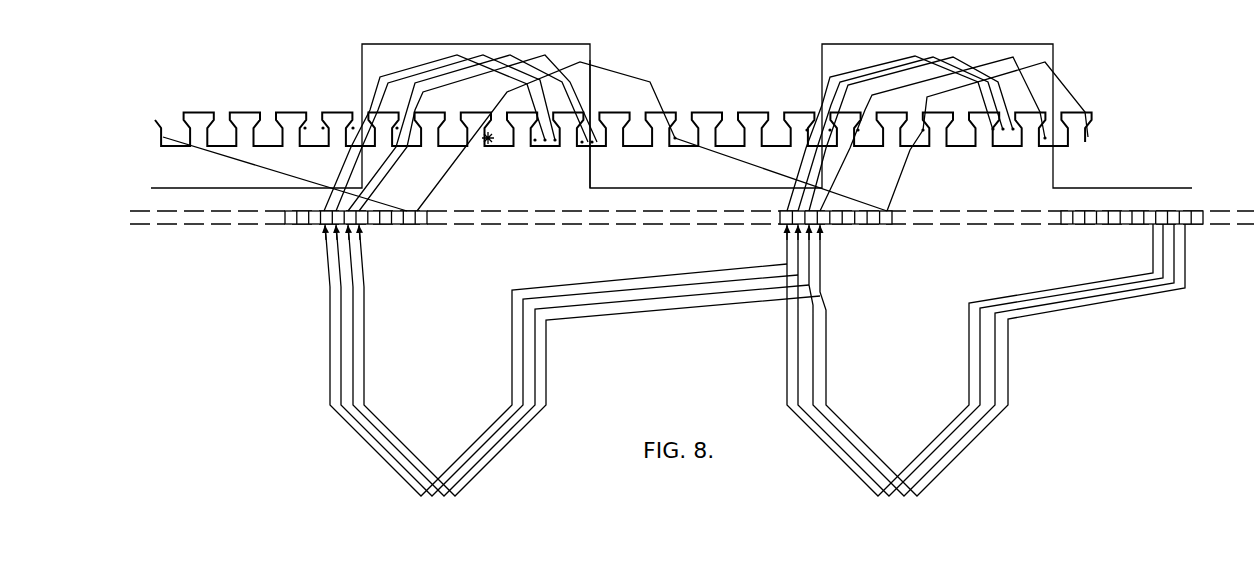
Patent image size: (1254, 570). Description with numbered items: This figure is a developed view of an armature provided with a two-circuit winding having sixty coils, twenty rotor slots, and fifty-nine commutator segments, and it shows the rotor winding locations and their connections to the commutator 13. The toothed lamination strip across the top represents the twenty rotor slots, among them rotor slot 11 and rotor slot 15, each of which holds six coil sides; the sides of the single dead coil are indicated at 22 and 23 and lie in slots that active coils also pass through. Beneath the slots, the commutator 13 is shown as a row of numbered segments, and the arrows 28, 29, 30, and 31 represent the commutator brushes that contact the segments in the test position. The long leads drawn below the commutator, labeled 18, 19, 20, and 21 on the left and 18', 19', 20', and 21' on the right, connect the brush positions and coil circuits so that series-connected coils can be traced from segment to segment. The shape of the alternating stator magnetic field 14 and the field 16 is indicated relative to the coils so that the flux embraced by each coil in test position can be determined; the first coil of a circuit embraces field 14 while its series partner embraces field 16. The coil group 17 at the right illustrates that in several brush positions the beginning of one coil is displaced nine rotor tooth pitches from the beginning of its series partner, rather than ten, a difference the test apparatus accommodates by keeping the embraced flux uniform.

The rotor slot 11 is at (658, 147).
The commutator 13 is at (1184, 208).
The magnetic field 14 is at (229, 184).
The rotor slot 15 is at (582, 61).
The magnetic field 16 is at (598, 174).
The second coil group 17 is at (1060, 58).
The lead wire 18 is at (533, 360).
The lead wire 19 is at (539, 360).
The lead wire 20 is at (578, 360).
The lead wire 21 is at (589, 360).
The lead wire 18' is at (947, 360).
The lead wire 19' is at (959, 360).
The lead wire 20' is at (991, 360).
The lead wire 21' is at (1002, 360).
The dead coil side 22 is at (316, 112).
The dead coil side 23 is at (490, 144).
The commutator brush 28 is at (326, 242).
The commutator brush 29 is at (337, 247).
The commutator brush 30 is at (350, 245).
The commutator brush 31 is at (362, 241).